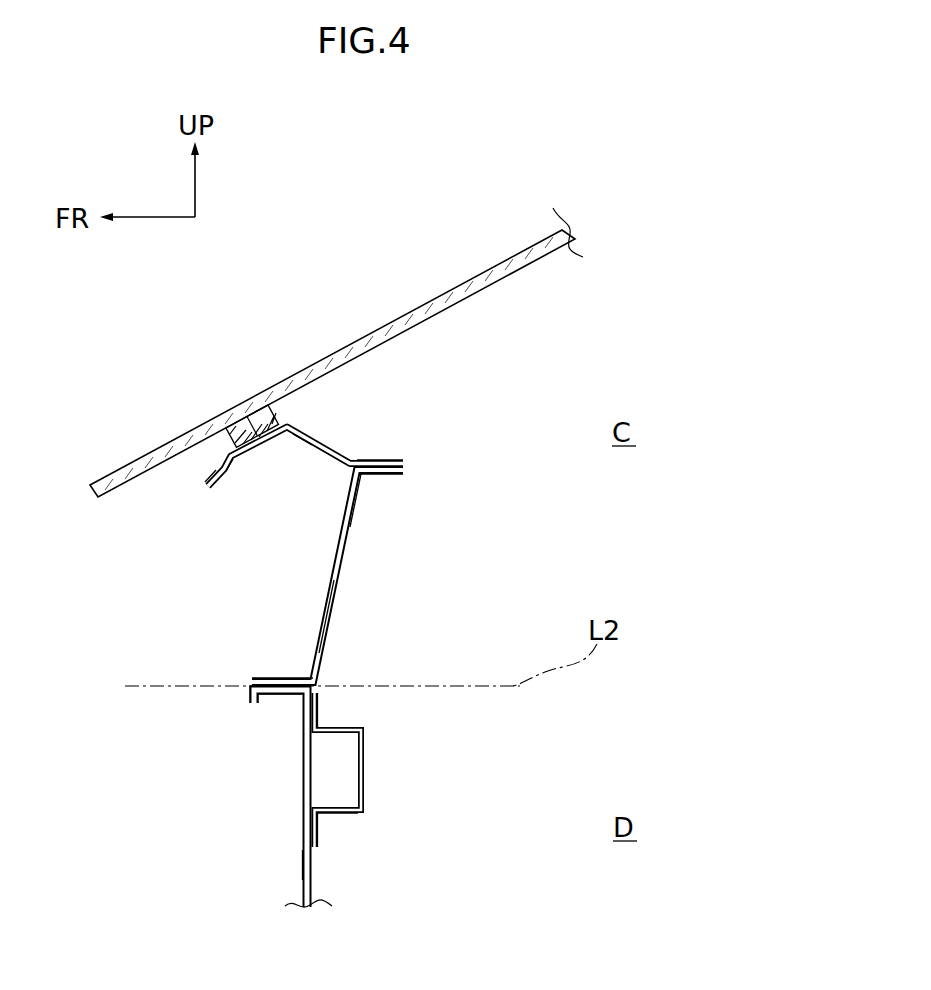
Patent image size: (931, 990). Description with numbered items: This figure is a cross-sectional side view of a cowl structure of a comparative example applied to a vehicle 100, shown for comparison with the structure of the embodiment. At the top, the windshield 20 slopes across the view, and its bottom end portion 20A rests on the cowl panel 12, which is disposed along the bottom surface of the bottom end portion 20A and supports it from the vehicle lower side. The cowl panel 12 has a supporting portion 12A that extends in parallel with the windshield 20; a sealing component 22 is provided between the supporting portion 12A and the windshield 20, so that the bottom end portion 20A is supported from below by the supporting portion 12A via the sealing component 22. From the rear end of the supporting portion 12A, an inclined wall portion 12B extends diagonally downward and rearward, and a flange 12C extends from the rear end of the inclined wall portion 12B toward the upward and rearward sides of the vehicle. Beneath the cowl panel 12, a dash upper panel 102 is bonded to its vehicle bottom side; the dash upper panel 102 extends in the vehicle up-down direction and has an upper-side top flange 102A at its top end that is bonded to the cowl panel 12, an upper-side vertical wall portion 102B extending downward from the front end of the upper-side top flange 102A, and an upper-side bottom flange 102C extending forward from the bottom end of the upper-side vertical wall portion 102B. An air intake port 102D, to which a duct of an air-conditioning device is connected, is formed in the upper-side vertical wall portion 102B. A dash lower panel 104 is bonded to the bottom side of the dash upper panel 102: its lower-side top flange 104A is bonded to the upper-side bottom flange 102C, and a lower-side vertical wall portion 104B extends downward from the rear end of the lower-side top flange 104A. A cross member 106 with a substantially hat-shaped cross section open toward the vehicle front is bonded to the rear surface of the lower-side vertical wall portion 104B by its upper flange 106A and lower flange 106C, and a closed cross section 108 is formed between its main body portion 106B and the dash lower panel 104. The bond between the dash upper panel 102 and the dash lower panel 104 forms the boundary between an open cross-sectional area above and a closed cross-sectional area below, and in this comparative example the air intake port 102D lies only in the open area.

The windshield 20 is at (399, 305).
The bottom end portion 20A is at (240, 401).
The sealing component 22 is at (205, 481).
The cowl panel 12 is at (346, 444).
The supporting portion 12A is at (240, 457).
The inclined wall portion 12B is at (302, 446).
The flange 12C is at (380, 459).
The vehicle 100 is at (504, 582).
The dash upper panel 102 is at (376, 568).
The upper-side top flange 102A is at (392, 477).
The upper-side vertical wall portion 102B is at (331, 633).
The upper-side bottom flange 102C is at (266, 678).
The air intake port 102D is at (352, 513).
The dash lower panel 104 is at (331, 796).
The lower-side top flange 104A is at (266, 709).
The lower-side vertical wall portion 104B is at (302, 862).
The cross member 106 is at (422, 778).
The upper flange 106A is at (320, 708).
The main body portion 106B is at (362, 810).
The lower flange 106C is at (320, 838).
The closed cross section 108 is at (356, 781).